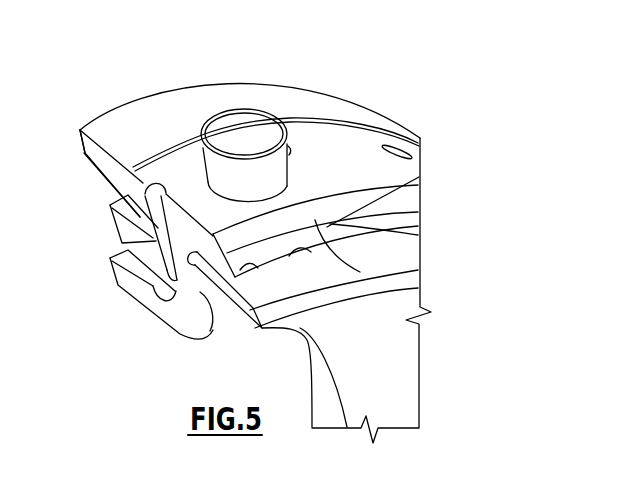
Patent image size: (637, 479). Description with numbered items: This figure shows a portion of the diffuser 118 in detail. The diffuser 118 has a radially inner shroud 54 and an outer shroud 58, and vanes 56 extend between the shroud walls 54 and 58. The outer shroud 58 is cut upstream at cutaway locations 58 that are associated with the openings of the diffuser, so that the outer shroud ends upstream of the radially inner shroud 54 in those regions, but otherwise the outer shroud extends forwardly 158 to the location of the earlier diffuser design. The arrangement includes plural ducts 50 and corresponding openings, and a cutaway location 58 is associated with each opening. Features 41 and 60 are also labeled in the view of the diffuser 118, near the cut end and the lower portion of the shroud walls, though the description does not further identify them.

The diffuser 118 is at (428, 96).
The duct 50 is at (207, 160).
The end face 41 is at (107, 158).
The locking pin 60 is at (184, 338).
The forward extension of outer shroud 158 is at (419, 181).
The vane 56 is at (420, 252).
The outer shroud 58 is at (308, 252).
The radially inner shroud 54 is at (283, 303).